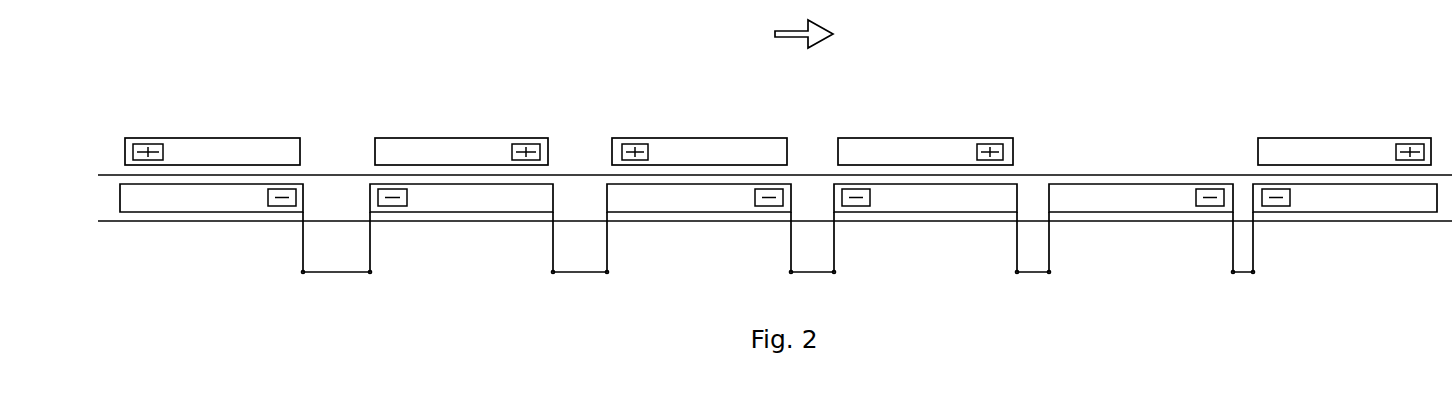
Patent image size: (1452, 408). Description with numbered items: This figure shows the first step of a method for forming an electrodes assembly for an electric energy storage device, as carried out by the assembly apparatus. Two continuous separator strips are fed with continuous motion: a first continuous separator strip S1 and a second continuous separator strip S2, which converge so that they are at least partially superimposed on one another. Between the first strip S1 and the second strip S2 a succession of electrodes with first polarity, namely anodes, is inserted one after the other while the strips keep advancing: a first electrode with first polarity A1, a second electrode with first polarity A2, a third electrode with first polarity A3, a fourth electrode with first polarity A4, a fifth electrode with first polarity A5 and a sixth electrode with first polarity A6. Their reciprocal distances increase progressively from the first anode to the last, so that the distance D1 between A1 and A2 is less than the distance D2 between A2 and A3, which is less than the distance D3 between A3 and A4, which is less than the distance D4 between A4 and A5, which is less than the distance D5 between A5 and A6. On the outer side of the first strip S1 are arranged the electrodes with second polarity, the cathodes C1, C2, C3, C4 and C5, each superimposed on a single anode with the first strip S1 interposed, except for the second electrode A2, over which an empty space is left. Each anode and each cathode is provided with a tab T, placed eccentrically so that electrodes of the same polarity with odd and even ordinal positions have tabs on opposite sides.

The electrode with second polarity C1 is at (1335, 147).
The electrode with second polarity C2 is at (915, 147).
The electrode with second polarity C3 is at (700, 147).
The electrode with second polarity C4 is at (452, 147).
The electrode with second polarity C5 is at (218, 147).
The first electrode with first polarity A1 is at (1358, 200).
The second electrode with first polarity A2 is at (1128, 200).
The third electrode with first polarity A3 is at (933, 200).
The fourth electrode with first polarity A4 is at (688, 200).
The fifth electrode with first polarity A5 is at (470, 200).
The sixth electrode with first polarity A6 is at (197, 200).
The distance between first and second electrode with first polarity D1 is at (1245, 275).
The distance between second and third electrode with first polarity D2 is at (1032, 275).
The distance between third and fourth electrode with first polarity D3 is at (815, 275).
The distance between fourth and fifth electrode with first polarity D4 is at (577, 275).
The distance between fifth and sixth electrode with first polarity D5 is at (343, 275).
The first continuous separator strip S1 is at (522, 222).
The second continuous separator strip S2 is at (1058, 175).
The tab T is at (517, 143).